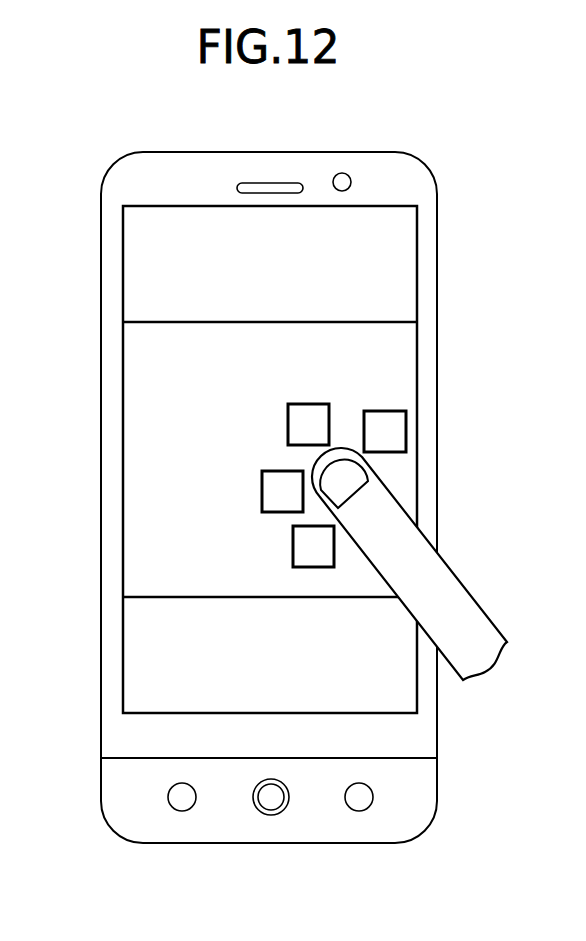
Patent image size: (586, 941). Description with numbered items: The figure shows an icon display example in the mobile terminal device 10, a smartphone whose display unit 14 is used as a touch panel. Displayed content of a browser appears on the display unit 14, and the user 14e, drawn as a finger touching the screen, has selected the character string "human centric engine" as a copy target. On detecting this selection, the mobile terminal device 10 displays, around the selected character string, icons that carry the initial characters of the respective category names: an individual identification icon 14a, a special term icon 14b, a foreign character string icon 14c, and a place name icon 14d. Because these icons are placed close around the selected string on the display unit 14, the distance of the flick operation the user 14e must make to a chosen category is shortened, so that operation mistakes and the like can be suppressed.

The mobile terminal device 10 is at (316, 152).
The display unit 14 is at (418, 357).
The individual identification icon 14a is at (262, 478).
The special term icon 14b is at (406, 428).
The foreign character string icon 14c is at (330, 410).
The place name icon 14d is at (307, 568).
The user 14e is at (452, 567).